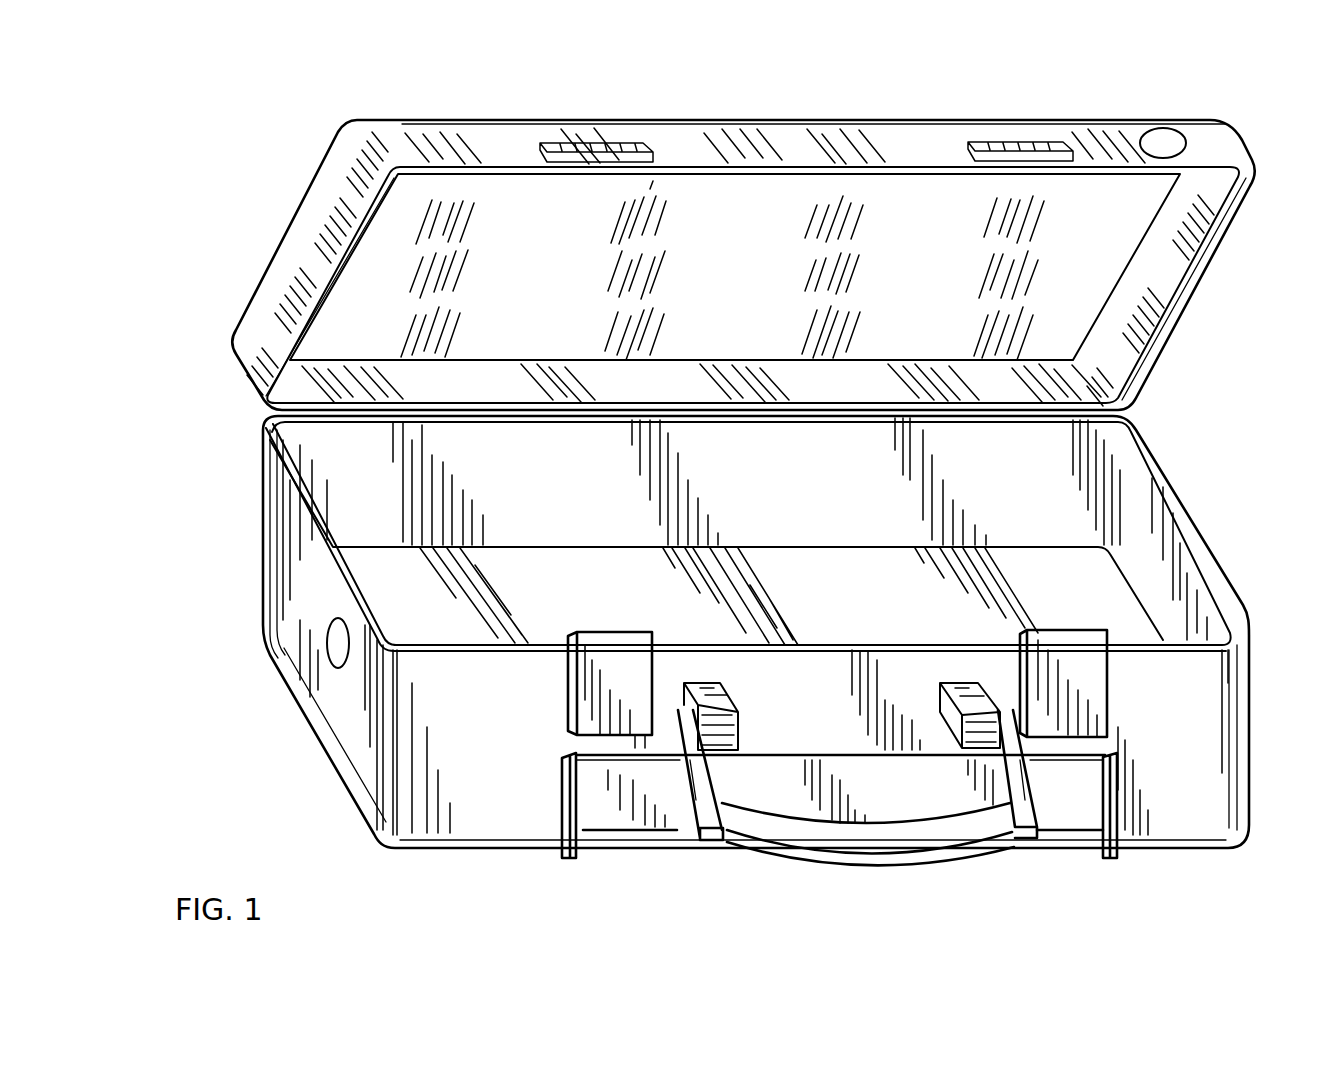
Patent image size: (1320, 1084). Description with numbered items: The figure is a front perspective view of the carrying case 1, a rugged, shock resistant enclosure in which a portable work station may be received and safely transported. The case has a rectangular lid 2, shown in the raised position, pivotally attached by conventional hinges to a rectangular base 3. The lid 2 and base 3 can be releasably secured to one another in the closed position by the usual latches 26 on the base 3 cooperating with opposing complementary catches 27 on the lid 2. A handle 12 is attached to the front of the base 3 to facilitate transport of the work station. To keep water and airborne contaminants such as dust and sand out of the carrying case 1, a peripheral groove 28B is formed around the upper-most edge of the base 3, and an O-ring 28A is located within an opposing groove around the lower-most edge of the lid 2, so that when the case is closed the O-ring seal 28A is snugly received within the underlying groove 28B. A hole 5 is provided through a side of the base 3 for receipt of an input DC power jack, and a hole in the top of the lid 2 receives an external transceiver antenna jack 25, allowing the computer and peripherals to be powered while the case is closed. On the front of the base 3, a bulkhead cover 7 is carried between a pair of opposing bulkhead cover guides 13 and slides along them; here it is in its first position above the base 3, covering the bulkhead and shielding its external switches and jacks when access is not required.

The carrying case 1 is at (277, 224).
The lid 2 is at (357, 118).
The base 3 is at (263, 587).
The hole 5 is at (337, 643).
The bulkhead cover 7 is at (677, 852).
The handle 12 is at (807, 860).
The bulkhead cover guides 13 is at (577, 858).
The external transceiver antenna jack 25 is at (1158, 140).
The latch 26 is at (600, 632).
The catches 27 is at (586, 145).
The O-ring 28A is at (1207, 267).
The peripheral groove 28B is at (1196, 527).